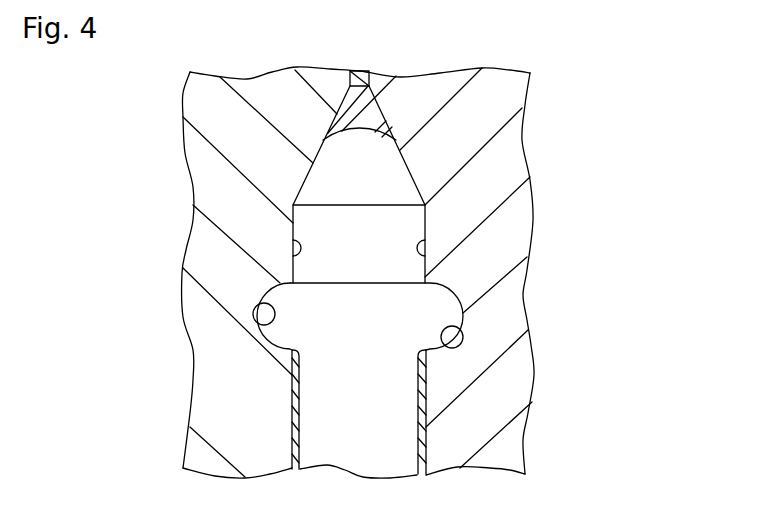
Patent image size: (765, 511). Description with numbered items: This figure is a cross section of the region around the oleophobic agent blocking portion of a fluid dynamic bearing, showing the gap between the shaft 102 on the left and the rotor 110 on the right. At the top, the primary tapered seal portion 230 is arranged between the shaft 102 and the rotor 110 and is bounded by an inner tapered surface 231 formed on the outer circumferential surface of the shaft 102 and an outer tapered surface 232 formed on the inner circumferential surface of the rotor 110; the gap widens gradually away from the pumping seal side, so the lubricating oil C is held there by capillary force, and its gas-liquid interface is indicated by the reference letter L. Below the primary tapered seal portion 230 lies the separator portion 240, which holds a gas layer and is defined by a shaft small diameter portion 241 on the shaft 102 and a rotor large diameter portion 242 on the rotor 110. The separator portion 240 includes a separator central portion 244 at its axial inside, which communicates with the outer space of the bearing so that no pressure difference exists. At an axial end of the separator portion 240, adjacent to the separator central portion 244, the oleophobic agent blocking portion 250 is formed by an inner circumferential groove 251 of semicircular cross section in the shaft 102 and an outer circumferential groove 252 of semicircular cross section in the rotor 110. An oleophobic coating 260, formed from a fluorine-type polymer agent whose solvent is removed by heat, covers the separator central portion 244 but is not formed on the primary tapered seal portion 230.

The primary tapered seal portion 230 is at (420, 168).
The inner tapered surface 231 is at (302, 190).
The outer tapered surface 232 is at (408, 169).
The lubricating oil C is at (384, 124).
The gas-liquid interface L is at (356, 131).
The separator portion 240 is at (418, 226).
The shaft small diameter portion 241 is at (290, 256).
The rotor large diameter portion 242 is at (426, 254).
The oleophobic agent blocking portion 250 is at (469, 321).
The inner circumferential groove 251 is at (251, 322).
The outer circumferential groove 252 is at (463, 341).
The separator central portion 244 is at (408, 436).
The oleophobic coating 260 is at (427, 401).
The shaft 102 is at (284, 428).
The rotor 110 is at (472, 440).